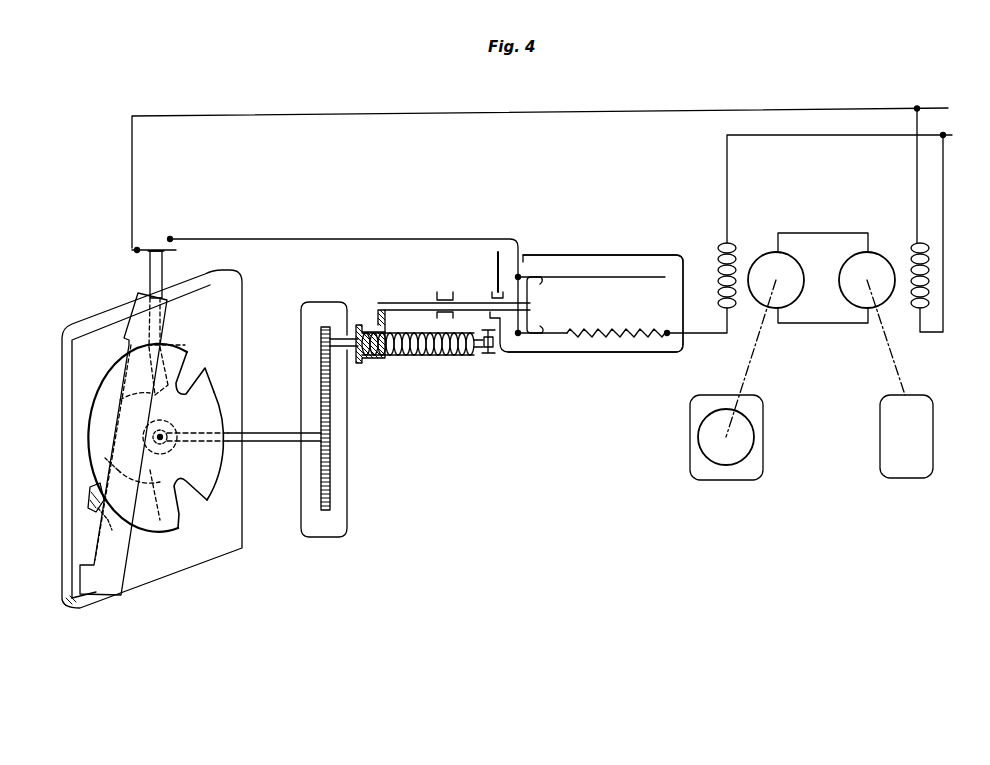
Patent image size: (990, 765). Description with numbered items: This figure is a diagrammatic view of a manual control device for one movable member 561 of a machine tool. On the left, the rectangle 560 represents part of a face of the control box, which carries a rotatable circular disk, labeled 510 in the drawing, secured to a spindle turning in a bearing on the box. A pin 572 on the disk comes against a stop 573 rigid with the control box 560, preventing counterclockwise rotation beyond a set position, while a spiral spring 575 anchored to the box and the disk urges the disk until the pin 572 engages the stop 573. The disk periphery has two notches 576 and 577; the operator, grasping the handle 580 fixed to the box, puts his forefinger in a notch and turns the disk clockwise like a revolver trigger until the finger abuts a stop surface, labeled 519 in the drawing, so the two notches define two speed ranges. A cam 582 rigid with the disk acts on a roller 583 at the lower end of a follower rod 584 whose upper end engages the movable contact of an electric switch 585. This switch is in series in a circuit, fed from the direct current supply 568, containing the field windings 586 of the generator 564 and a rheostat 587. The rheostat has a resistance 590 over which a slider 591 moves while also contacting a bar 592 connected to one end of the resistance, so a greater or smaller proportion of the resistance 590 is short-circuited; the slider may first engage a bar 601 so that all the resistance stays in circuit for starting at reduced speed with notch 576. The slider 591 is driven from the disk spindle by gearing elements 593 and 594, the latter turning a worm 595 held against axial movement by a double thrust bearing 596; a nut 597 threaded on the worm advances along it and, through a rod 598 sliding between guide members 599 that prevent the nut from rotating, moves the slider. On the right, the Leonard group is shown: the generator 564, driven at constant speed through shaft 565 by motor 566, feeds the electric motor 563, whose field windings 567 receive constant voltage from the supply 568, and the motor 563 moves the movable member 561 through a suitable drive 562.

The disc 510 is at (96, 426).
The cam 519 is at (141, 480).
The control box 560 is at (244, 293).
The movable member 561 is at (920, 460).
The drive 562 is at (908, 375).
The electric motor 563 is at (875, 268).
The generator 564 is at (788, 298).
The shaft 565 is at (760, 377).
The motor 566 is at (726, 481).
The field windings 567 is at (932, 282).
The direct current supply 568 is at (826, 134).
The pin 572 is at (96, 490).
The stop 573 is at (98, 508).
The spiral spring 575 is at (177, 445).
The notch 576 is at (192, 496).
The notch 577 is at (197, 385).
The handle 580 is at (107, 580).
The cam 582 is at (115, 465).
The roller 583 is at (157, 395).
The follower rod 584 is at (152, 279).
The electric switch 585 is at (130, 251).
The field windings 586 is at (720, 262).
The rheostat 587 is at (605, 255).
The resistance 590 is at (627, 338).
The slider 591 is at (535, 300).
The bar 592 is at (632, 276).
The gearing element 593 is at (324, 520).
The gearing element 594 is at (327, 325).
The worm 595 is at (455, 351).
The double thrust bearing 596 is at (493, 356).
The nut 597 is at (368, 365).
The rod 598 is at (478, 301).
The guide members 599 is at (446, 291).
The bar 601 is at (554, 335).